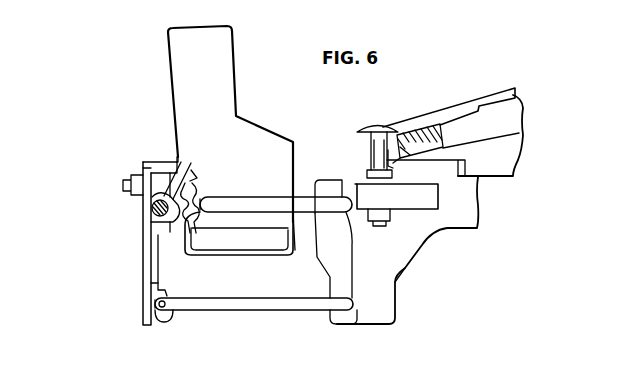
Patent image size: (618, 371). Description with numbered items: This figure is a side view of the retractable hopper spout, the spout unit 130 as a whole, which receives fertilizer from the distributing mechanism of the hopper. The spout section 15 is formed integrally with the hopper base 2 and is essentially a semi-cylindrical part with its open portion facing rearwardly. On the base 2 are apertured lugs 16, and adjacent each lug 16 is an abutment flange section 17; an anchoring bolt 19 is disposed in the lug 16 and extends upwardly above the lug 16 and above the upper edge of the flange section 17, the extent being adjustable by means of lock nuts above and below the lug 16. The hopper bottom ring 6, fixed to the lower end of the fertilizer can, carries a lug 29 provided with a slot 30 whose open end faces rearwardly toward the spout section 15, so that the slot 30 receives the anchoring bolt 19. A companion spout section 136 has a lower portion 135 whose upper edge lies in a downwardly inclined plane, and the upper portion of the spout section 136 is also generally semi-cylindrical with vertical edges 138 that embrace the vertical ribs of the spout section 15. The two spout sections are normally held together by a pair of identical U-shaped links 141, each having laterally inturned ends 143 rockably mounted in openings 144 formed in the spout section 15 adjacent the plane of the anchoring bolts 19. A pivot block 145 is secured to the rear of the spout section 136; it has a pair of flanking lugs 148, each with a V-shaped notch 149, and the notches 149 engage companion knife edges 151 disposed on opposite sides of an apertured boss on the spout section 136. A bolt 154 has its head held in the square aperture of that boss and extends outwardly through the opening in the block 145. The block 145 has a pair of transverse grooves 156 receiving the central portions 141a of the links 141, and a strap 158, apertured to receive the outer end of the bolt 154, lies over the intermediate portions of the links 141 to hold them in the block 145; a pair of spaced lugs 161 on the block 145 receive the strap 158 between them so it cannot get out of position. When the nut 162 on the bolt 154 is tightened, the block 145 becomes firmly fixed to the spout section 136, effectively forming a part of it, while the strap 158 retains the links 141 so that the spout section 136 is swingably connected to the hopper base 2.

The hopper base 2 is at (462, 231).
The hopper bottom ring 6 is at (495, 92).
The spout section 15 is at (400, 273).
The apertured lug 16 is at (398, 200).
The abutment flange section 17 is at (450, 164).
The anchoring bolt 19 is at (371, 128).
The lug 29 is at (399, 134).
The slot 30 is at (389, 152).
The spout unit 130 is at (314, 129).
The lower portion of spout section 135 is at (284, 179).
The companion spout section 136 is at (165, 111).
The vertical edge 138 is at (233, 63).
The link 141 is at (260, 205).
The central portion of link 141a is at (150, 211).
The laterally inturned end 143 is at (348, 222).
The opening 144 is at (339, 190).
The pivot block 145 is at (150, 255).
The flanking lug 148 is at (176, 193).
The V-shaped notch 149 is at (167, 225).
The knife edge 151 is at (194, 195).
The bolt 154 is at (122, 185).
The transverse groove 156 is at (153, 207).
The strap 158 is at (150, 266).
The lug 161 is at (150, 285).
The nut 162 is at (133, 182).